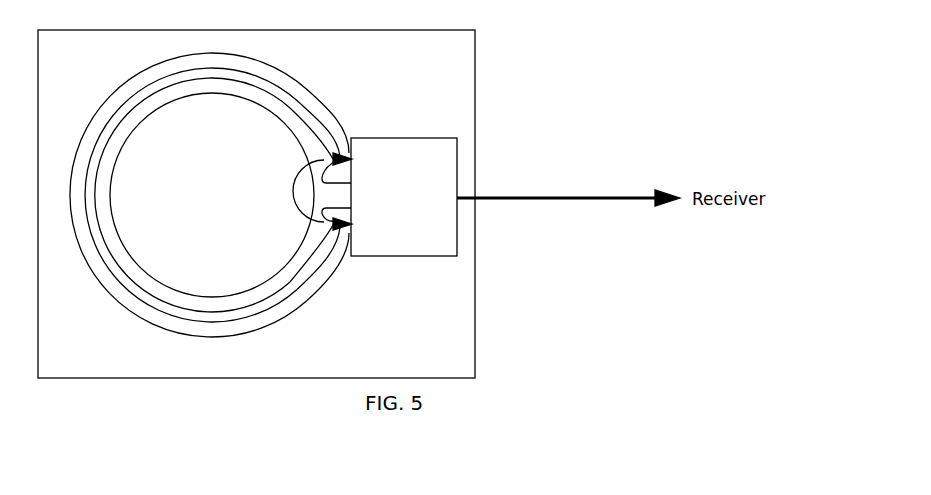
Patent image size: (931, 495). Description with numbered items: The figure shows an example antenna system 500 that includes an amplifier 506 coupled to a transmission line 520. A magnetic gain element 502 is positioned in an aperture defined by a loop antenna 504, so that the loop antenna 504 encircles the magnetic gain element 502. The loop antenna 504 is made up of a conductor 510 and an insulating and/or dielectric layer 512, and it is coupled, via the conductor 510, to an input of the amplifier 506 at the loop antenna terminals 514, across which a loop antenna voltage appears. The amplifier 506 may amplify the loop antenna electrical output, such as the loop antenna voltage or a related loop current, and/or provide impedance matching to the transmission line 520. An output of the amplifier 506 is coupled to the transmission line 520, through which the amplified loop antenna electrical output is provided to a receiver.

The antenna system 500 is at (256, 204).
The magnetic gain element 502 is at (212, 195).
The loop antenna 504 is at (336, 90).
The amplifier 506 is at (404, 197).
The conductor 510 is at (122, 104).
The insulating and/or dielectric layer 512 is at (272, 90).
The loop antenna terminals 514 is at (313, 191).
The transmission line 520 is at (635, 199).